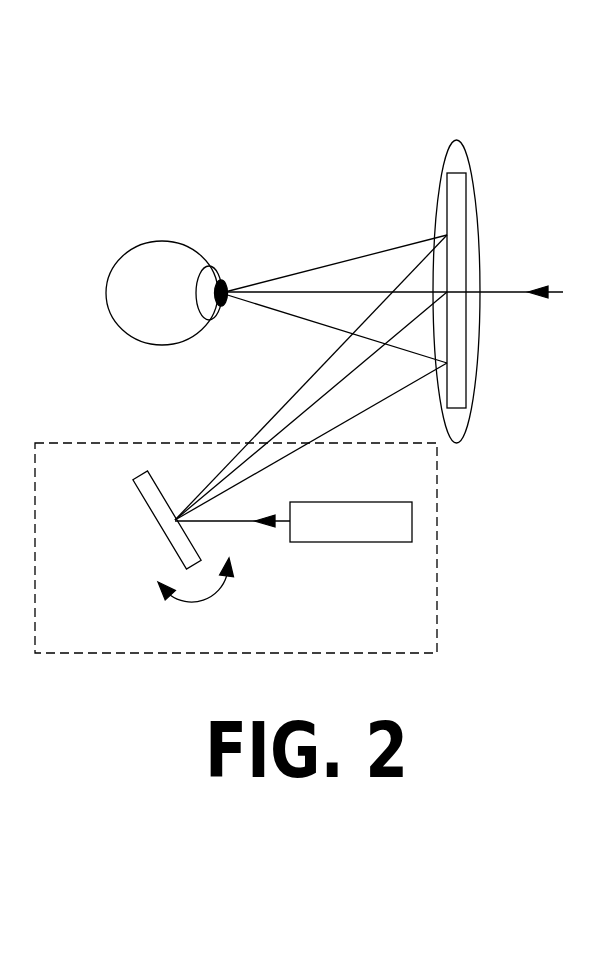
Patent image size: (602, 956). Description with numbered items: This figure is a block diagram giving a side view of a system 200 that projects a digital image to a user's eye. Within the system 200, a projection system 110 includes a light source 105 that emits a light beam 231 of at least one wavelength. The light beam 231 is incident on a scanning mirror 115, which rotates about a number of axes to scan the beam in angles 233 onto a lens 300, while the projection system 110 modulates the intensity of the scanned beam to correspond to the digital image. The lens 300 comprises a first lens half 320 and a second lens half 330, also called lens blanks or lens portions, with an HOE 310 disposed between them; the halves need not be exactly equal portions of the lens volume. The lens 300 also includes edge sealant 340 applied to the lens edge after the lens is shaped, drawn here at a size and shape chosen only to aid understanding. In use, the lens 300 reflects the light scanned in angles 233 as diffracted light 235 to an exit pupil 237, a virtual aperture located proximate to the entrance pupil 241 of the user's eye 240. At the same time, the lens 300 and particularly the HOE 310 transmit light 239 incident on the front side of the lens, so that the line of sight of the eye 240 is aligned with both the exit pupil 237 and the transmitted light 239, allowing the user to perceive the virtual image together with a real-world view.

The system 200 is at (58, 46).
The lens 300 is at (476, 68).
The edge sealant 340 is at (465, 150).
The HOE 310 is at (447, 217).
The first lens half 320 is at (440, 185).
The second lens half 330 is at (480, 255).
The user's eye 240 is at (143, 242).
The entrance pupil 241 is at (219, 281).
The exit pupil 237 is at (227, 303).
The diffracted light 235 is at (268, 309).
The transmitted light 239 is at (511, 298).
The scan angles 233 is at (207, 485).
The light beam 231 is at (242, 523).
The scanning mirror 115 is at (159, 523).
The light source 105 is at (351, 522).
The projection system 110 is at (67, 633).